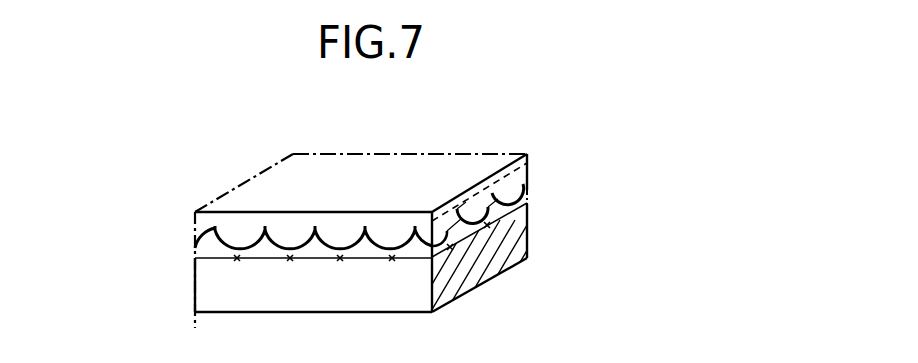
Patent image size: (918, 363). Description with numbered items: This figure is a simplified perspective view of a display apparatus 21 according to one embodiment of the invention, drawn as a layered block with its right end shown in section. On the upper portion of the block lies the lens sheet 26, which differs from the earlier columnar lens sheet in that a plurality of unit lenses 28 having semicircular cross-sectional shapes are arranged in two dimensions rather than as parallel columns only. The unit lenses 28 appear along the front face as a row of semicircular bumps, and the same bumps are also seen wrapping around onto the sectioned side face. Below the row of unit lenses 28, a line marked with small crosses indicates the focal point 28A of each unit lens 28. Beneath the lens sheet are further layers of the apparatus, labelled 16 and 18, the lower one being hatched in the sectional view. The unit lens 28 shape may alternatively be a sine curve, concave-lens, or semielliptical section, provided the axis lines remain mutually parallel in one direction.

The display apparatus 21 is at (424, 142).
The absorbent core layer 16 is at (526, 215).
The backsheet layer 18 is at (481, 284).
The lens sheet 26 is at (519, 182).
The unit lens 28 is at (225, 248).
The focal point 28A is at (393, 260).